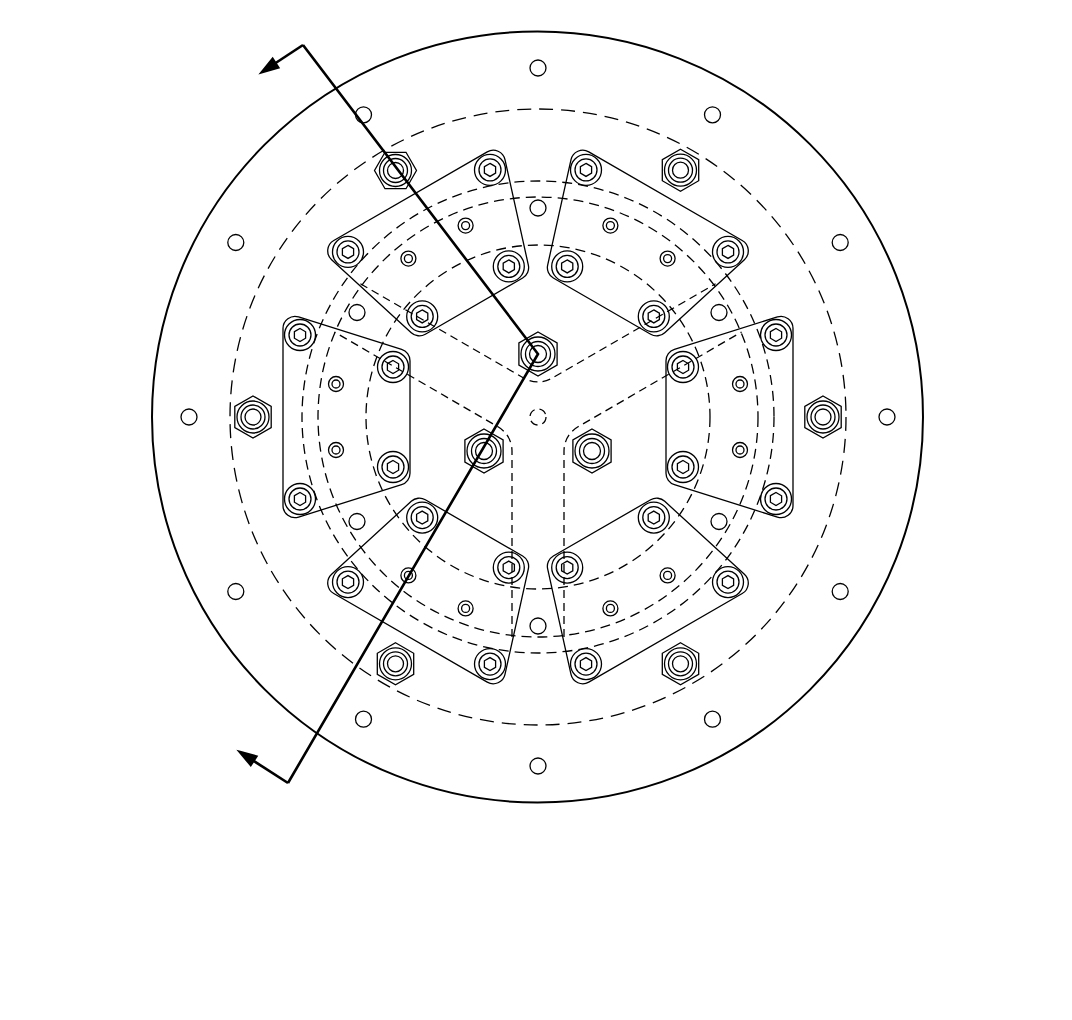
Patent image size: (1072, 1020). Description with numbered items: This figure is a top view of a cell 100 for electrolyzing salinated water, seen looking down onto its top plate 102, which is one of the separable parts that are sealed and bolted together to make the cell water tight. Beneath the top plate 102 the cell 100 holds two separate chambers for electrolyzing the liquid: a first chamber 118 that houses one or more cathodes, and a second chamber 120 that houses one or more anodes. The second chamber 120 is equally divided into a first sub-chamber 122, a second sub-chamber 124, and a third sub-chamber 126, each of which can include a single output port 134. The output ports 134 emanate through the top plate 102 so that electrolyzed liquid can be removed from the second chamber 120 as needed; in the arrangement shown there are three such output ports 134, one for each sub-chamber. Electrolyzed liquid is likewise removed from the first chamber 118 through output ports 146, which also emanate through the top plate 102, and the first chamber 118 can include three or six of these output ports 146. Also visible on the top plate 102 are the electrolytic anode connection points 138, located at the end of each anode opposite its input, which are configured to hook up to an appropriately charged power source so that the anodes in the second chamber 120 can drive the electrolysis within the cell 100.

The cell 100 is at (972, 180).
The top plate 102 is at (812, 163).
The first chamber 118 is at (810, 491).
The second chamber 120 is at (410, 489).
The first sub-chamber 122 is at (539, 243).
The second sub-chamber 124 is at (711, 413).
The third sub-chamber 126 is at (446, 388).
The output port 134 is at (535, 352).
The electrolytic anode connection point 138 is at (609, 216).
The output port 146 is at (687, 165).